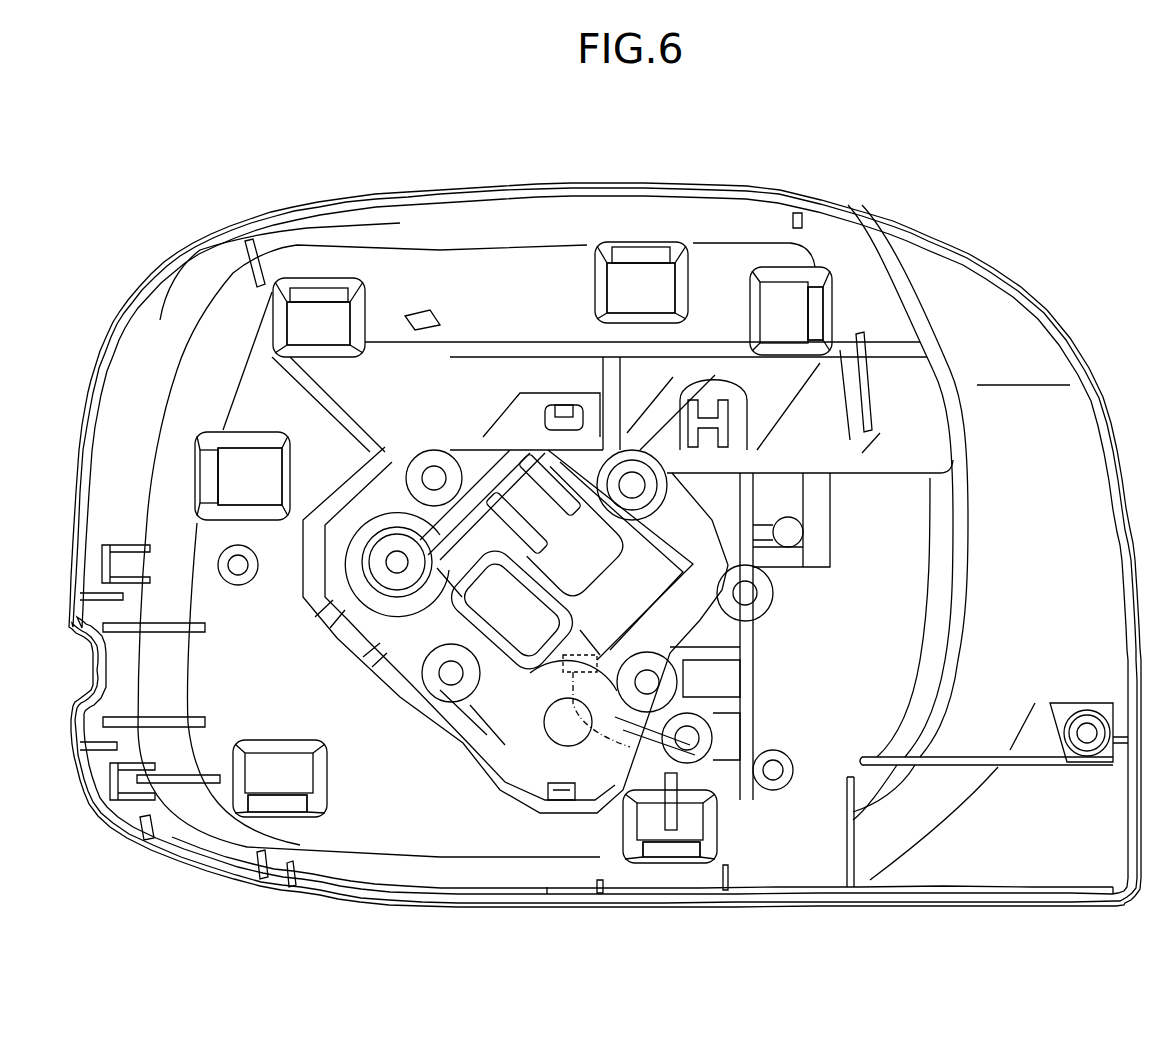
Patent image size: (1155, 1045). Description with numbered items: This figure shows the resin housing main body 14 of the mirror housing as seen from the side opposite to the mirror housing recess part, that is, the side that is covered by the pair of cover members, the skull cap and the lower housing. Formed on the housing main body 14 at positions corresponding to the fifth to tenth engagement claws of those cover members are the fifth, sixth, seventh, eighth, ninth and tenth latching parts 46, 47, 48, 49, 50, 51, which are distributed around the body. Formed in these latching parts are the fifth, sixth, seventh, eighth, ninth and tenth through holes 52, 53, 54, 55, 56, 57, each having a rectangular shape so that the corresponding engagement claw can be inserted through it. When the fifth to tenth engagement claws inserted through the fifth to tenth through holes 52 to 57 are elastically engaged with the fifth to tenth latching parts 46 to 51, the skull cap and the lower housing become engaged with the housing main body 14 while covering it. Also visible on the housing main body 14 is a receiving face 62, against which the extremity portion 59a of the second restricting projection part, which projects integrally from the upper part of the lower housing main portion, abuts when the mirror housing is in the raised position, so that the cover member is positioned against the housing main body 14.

The housing main body 14 is at (1033, 292).
The fifth latching part 46 is at (780, 292).
The sixth latching part 47 is at (636, 287).
The seventh latching part 48 is at (345, 323).
The eighth latching part 49 is at (262, 505).
The ninth latching part 50 is at (690, 815).
The tenth latching part 51 is at (292, 773).
The fifth through hole 52 is at (805, 322).
The sixth through hole 53 is at (636, 262).
The seventh through hole 54 is at (316, 300).
The eighth through hole 55 is at (210, 480).
The ninth through hole 56 is at (670, 845).
The tenth through hole 57 is at (290, 800).
The extremity portion 59a is at (590, 725).
The receiving face 62 is at (558, 683).